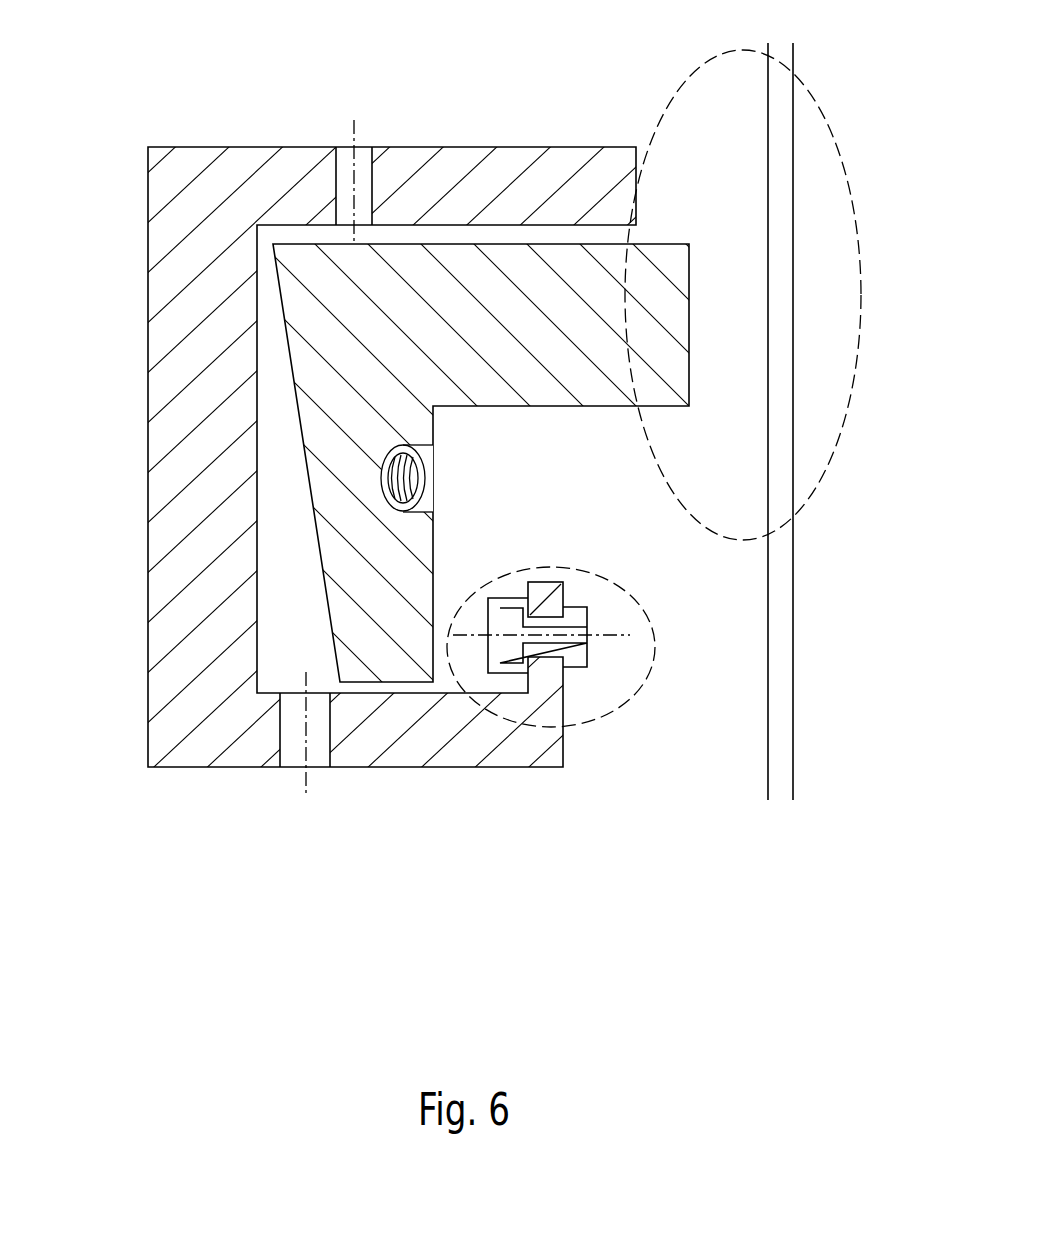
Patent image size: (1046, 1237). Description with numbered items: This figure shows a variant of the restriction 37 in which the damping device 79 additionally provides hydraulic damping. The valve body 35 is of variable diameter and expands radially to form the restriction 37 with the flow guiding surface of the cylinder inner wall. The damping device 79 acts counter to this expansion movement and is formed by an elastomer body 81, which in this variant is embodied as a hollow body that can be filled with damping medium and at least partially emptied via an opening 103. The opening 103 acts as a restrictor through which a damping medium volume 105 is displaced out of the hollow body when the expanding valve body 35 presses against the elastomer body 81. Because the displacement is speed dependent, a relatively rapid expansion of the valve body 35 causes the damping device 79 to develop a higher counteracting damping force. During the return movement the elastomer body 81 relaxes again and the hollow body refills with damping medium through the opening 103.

The valve body 35 is at (330, 443).
The restriction 37 is at (683, 78).
The damping device 79 is at (620, 705).
The elastomer body 81 is at (515, 668).
The opening 103 is at (587, 632).
The damping medium volume 105 is at (507, 653).